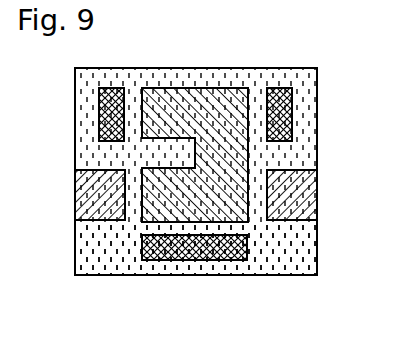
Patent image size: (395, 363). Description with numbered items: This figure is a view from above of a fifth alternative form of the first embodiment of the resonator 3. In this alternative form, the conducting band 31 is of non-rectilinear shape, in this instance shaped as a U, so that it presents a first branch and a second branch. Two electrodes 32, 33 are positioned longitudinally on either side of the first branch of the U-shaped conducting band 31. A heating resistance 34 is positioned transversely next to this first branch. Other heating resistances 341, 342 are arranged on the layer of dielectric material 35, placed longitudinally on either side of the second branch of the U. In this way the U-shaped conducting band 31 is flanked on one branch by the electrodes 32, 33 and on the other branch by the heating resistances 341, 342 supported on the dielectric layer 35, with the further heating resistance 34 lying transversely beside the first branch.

The resonator 3 is at (194, 62).
The conducting band 31 is at (245, 70).
The electrode 32 is at (75, 195).
The electrode 33 is at (317, 198).
The heating resistance 34 is at (142, 245).
The heating resistance 341 is at (99, 114).
The heating resistance 342 is at (292, 113).
The layer of dielectric material 35 is at (194, 275).